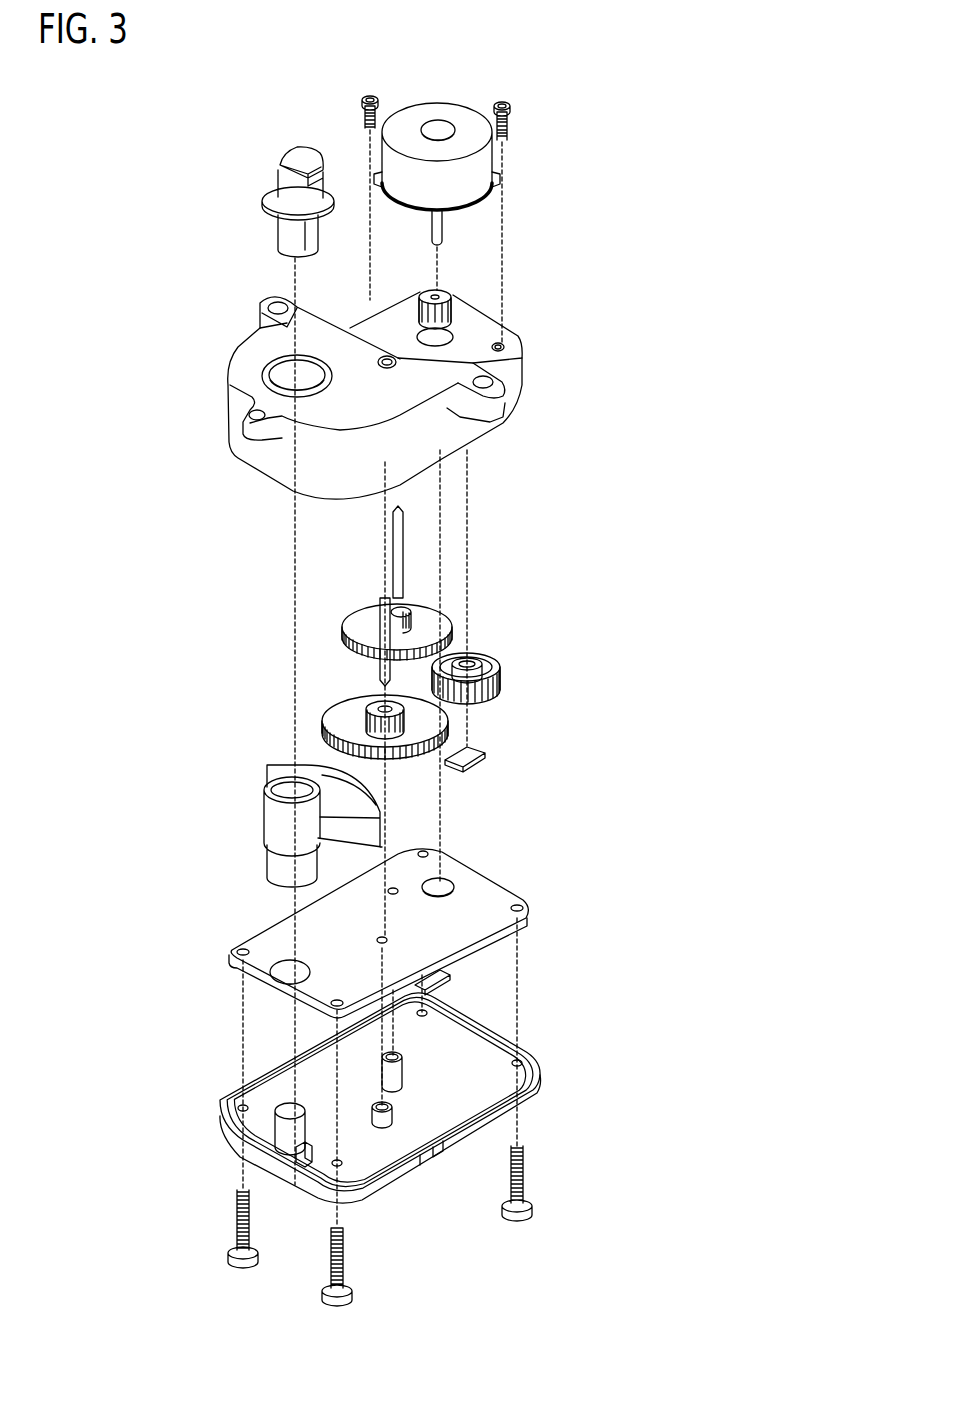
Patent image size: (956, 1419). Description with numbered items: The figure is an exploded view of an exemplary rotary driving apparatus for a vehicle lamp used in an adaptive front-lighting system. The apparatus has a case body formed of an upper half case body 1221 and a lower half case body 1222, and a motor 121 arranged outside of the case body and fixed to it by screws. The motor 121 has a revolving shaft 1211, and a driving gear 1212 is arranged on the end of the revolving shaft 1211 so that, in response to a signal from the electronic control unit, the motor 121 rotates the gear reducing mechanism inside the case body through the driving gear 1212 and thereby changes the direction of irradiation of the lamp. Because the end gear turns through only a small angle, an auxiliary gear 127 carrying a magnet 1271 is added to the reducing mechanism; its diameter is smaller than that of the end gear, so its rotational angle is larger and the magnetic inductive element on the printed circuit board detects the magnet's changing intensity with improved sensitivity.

The motor 121 is at (448, 115).
The revolving shaft 1211 is at (443, 232).
The driving gear 1212 is at (453, 307).
The upper housing 1221 is at (508, 374).
The auxiliary gear 127 is at (488, 650).
The magnet 1271 is at (484, 752).
The lower housing 1222 is at (540, 1058).